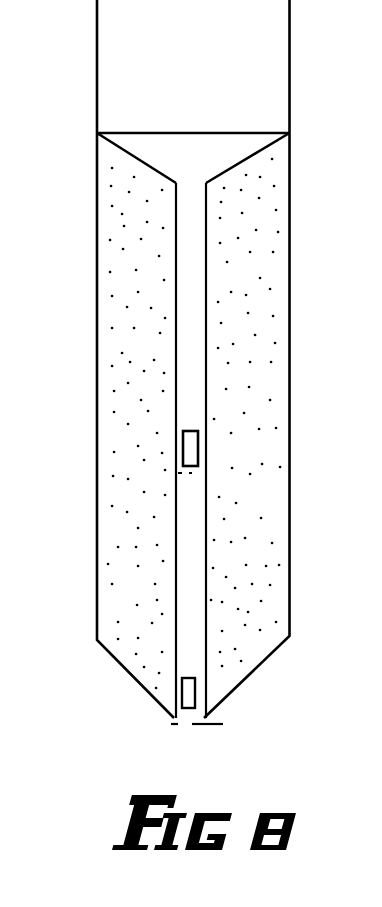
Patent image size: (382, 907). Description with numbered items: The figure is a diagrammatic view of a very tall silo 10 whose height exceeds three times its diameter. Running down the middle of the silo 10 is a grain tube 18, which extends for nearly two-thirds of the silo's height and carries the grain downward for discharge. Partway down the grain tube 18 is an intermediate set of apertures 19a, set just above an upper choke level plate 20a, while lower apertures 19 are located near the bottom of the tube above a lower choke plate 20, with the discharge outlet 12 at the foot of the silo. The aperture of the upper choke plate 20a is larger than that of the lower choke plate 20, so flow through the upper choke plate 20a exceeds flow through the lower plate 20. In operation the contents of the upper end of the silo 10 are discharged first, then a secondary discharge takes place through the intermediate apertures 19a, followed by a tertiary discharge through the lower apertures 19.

The silo 10 is at (92, 134).
The writing tip 12 is at (212, 726).
The grain tube 18 is at (207, 280).
The apertures 19 is at (192, 692).
The intermediate set of apertures 19a is at (198, 453).
The choke plate 20 is at (162, 715).
The upper choke level plate 20a is at (202, 472).